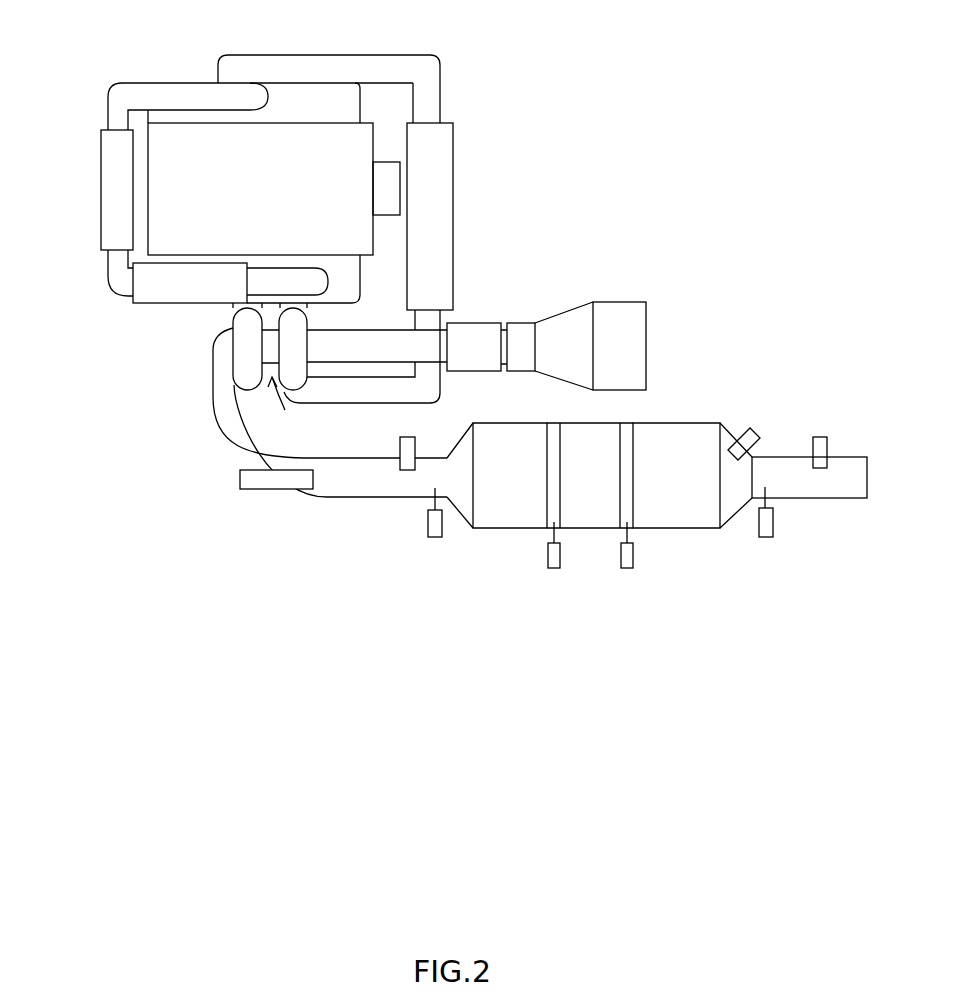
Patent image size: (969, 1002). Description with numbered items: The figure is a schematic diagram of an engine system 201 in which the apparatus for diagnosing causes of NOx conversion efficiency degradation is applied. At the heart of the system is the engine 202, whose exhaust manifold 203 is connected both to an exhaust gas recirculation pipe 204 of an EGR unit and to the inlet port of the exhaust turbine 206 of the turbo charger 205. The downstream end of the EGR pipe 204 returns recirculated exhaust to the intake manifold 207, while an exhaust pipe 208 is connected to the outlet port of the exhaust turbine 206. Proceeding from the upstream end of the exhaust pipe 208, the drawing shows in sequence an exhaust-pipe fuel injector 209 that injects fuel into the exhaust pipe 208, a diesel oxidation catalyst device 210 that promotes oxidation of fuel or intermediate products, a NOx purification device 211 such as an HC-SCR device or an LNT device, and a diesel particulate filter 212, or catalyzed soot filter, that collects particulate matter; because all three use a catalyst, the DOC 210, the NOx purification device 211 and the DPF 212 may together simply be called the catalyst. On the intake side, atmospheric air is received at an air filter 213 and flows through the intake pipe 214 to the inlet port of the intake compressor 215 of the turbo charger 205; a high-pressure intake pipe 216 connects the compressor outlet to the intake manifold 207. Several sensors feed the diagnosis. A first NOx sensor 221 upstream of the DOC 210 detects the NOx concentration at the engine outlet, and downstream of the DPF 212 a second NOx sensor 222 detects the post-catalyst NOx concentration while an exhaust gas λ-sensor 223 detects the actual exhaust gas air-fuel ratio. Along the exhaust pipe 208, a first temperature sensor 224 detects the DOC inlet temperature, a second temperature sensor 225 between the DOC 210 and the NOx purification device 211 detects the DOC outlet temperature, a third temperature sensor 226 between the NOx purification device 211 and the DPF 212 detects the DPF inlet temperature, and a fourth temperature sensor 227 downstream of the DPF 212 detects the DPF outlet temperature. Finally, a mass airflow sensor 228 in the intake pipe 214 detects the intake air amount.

The engine system 201 is at (578, 148).
The engine 202 is at (193, 122).
The exhaust manifold 203 is at (353, 275).
The exhaust gas recirculation (EGR) pipe 204 is at (107, 273).
The turbo charger 205 is at (354, 386).
The exhaust turbine 206 is at (240, 332).
The intake manifold 207 is at (307, 90).
The exhaust pipe 208 is at (213, 403).
The exhaust-pipe fuel injector 209 is at (257, 493).
The diesel oxidation catalyst (DOC) device 210 is at (497, 528).
The NOx purification device 211 is at (588, 530).
The diesel particulate filter (DPF) 212 is at (687, 532).
The air filter 213 is at (648, 318).
The intake pipe 214 is at (380, 330).
The intake compressor 215 is at (282, 353).
The high-pressure intake pipe 216 is at (433, 33).
The first NOx sensor 221 is at (397, 463).
The second NOx sensor 222 is at (820, 437).
The exhaust gas λ-sensor 223 is at (743, 432).
The first temperature sensor 224 is at (427, 530).
The second temperature sensor 225 is at (550, 570).
The third temperature sensor 226 is at (633, 557).
The fourth temperature sensor 227 is at (773, 530).
The mass airflow sensor (MAF sensor) 228 is at (482, 322).